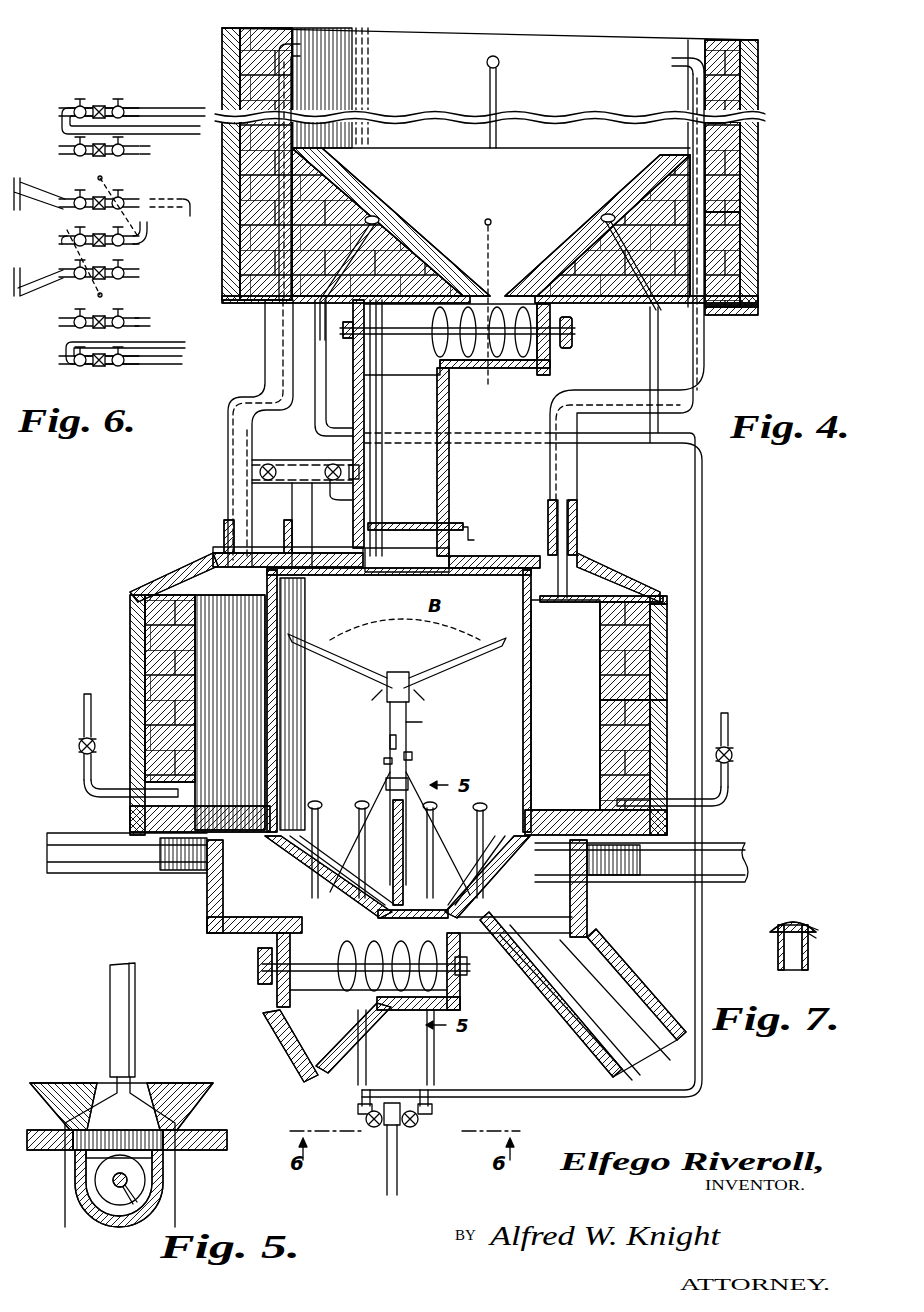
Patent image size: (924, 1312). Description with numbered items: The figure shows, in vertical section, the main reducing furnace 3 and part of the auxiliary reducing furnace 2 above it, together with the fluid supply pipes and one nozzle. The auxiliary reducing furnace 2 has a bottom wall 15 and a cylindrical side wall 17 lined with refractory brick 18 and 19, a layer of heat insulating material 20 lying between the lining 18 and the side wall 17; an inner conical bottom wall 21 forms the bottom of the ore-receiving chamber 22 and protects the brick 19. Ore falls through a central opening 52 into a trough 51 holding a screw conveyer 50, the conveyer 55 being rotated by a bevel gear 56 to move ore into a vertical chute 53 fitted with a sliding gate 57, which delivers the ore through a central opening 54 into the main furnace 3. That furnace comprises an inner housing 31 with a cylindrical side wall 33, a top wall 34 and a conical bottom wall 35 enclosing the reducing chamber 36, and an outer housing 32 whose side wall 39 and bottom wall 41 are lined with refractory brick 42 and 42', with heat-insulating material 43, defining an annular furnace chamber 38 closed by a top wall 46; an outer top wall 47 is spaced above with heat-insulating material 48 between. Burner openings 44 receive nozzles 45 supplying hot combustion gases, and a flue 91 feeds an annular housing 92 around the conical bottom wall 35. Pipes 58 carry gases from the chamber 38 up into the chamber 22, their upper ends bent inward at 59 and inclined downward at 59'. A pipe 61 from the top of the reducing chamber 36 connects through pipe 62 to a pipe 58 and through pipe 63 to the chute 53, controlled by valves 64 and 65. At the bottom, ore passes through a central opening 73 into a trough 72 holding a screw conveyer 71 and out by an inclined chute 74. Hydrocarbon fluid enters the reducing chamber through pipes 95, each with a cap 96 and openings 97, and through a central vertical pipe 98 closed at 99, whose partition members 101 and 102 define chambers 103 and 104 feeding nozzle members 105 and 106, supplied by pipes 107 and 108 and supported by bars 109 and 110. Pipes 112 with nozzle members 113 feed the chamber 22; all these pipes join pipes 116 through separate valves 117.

In FIG. 4, the auxiliary reducing furnace 2 is at (768, 189).
In FIG. 4, the main reducing furnace 3 is at (130, 607).
In FIG. 4, the bottom wall 15 is at (735, 315).
In FIG. 4, the side wall 17 is at (748, 152).
In FIG. 4, the refractory brick lining 18 is at (740, 92).
In FIG. 4, the refractory brick lining 19 is at (672, 228).
In FIG. 4, the heat insulating material 20 is at (745, 269).
In FIG. 4, the inner conical bottom wall 21 is at (340, 198).
In FIG. 4, the ore-receiving chamber 22 is at (434, 62).
In FIG. 4, the inner housing 31 is at (282, 692).
In FIG. 4, the outer housing 32 is at (132, 656).
In FIG. 4, the side wall 33 is at (532, 716).
In FIG. 4, the top wall 34 is at (490, 562).
In FIG. 4, the conical bottom wall 35 is at (214, 894).
In FIG. 5, the conical bottom wall 35 is at (200, 1100).
In FIG. 4, the reducing chamber 36 is at (545, 660).
In FIG. 4, the annular furnace chamber 38 is at (592, 662).
In FIG. 4, the cylindrical side wall 39 is at (668, 626).
In FIG. 4, the bottom wall 41 is at (636, 880).
In FIG. 4, the refractory brick lining 42 is at (676, 733).
In FIG. 4, the refractory brick lining 42' is at (596, 808).
In FIG. 4, the heat-insulating material 43 is at (662, 702).
In FIG. 4, the burner openings 44 is at (135, 802).
In FIG. 4, the burner nozzles 45 is at (84, 780).
In FIG. 4, the top wall 46 is at (605, 580).
In FIG. 4, the outer top wall 47 is at (580, 566).
In FIG. 4, the heat-insulating material 48 is at (630, 588).
In FIG. 4, the screw conveyer 50 is at (450, 344).
In FIG. 4, the trough 51 is at (552, 372).
In FIG. 4, the central opening 52 is at (500, 318).
In FIG. 4, the vertical chute 53 is at (366, 410).
In FIG. 4, the central opening 54 is at (386, 558).
In FIG. 4, the conveyer 55 is at (352, 346).
In FIG. 4, the bevel gear 56 is at (573, 332).
In FIG. 4, the sliding gate 57 is at (432, 526).
In FIG. 4, the pipes 58 is at (280, 316).
In FIG. 4, the inwardly bent upper ends 59 is at (688, 39).
In FIG. 4, the inclined inner ends 59' is at (579, 100).
In FIG. 4, the pipe 61 is at (236, 522).
In FIG. 4, the connecting pipe 62 is at (290, 460).
In FIG. 4, the pipe 63 is at (360, 472).
In FIG. 4, the valve 64 is at (260, 472).
In FIG. 4, the valve 65 is at (353, 500).
In FIG. 4, the screw conveyer 71 is at (362, 970).
In FIG. 5, the screw conveyer 71 is at (104, 1185).
In FIG. 4, the trough 72 is at (462, 978).
In FIG. 5, the trough 72 is at (108, 1216).
In FIG. 4, the central opening 73 is at (470, 912).
In FIG. 5, the central opening 73 is at (92, 1160).
In FIG. 4, the inclined chute 74 is at (316, 1076).
In FIG. 4, the flue 91 is at (622, 986).
In FIG. 4, the annular housing 92 is at (588, 908).
In FIG. 4, the pipes 95 is at (477, 822).
In FIG. 6, the pipes 95 is at (140, 150).
In FIG. 7, the pipes 95 is at (778, 958).
In FIG. 4, the cap 96 is at (481, 802).
In FIG. 7, the cap 96 is at (792, 918).
In FIG. 7, the openings 97 is at (814, 930).
In FIG. 4, the central vertical pipe 98 is at (408, 712).
In FIG. 5, the central vertical pipe 98 is at (112, 1000).
In FIG. 4, the closed upper end 99 is at (398, 672).
In FIG. 4, the partition member 101 is at (390, 734).
In FIG. 4, the partition member 102 is at (388, 816).
In FIG. 4, the lower chamber 103 is at (384, 762).
In FIG. 4, the upper chamber 104 is at (422, 722).
In FIG. 4, the nozzle members 105 is at (412, 758).
In FIG. 4, the nozzle members 106 is at (418, 686).
In FIG. 4, the pipe 107 is at (330, 882).
In FIG. 6, the pipe 107 is at (104, 294).
In FIG. 5, the pipe 107 is at (155, 1108).
In FIG. 4, the pipe 108 is at (386, 784).
In FIG. 6, the pipe 108 is at (104, 178).
In FIG. 5, the pipe 108 is at (88, 1110).
In FIG. 4, the supporting bar 109 is at (470, 636).
In FIG. 4, the supporting bar 110 is at (468, 874).
In FIG. 4, the pipes 112 is at (316, 338).
In FIG. 6, the pipes 112 is at (182, 122).
In FIG. 4, the nozzle member 113 is at (500, 218).
In FIG. 4, the pipes 116 is at (387, 1160).
In FIG. 6, the pipes 116 is at (103, 106).
In FIG. 4, the valve 117 is at (432, 1110).
In FIG. 6, the valve 117 is at (80, 222).